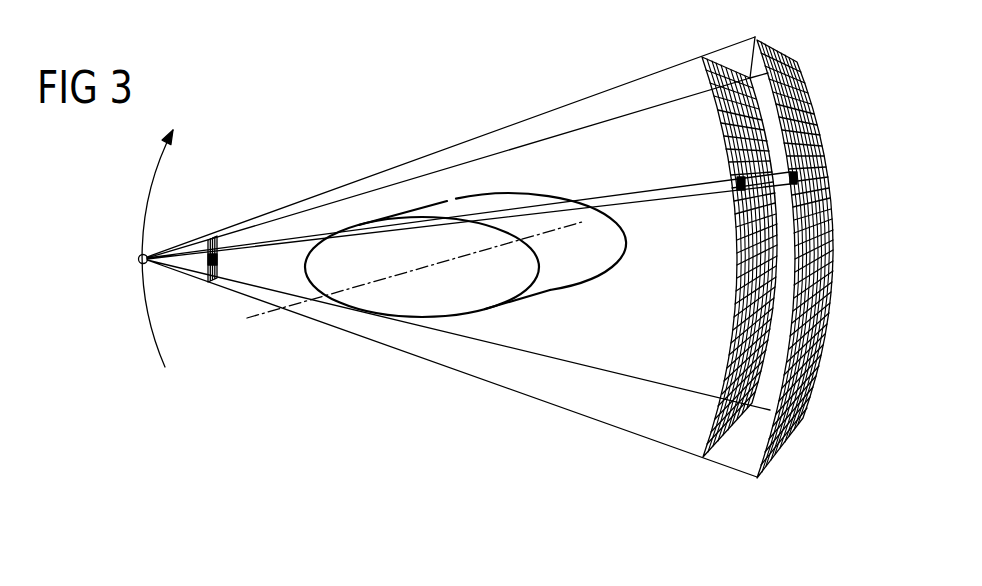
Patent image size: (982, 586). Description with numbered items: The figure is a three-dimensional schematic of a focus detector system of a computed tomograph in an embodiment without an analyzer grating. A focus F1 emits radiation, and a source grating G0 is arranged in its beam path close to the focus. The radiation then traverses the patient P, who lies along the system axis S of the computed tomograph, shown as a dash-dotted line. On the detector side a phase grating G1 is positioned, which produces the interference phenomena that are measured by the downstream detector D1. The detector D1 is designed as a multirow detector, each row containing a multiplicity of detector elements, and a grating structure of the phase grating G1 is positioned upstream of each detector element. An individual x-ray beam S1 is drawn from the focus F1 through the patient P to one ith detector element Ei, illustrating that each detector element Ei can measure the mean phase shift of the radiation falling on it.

The focus F1 is at (139, 257).
The source grating G0 is at (212, 236).
The system axis S is at (263, 311).
The patient P is at (414, 317).
The x-ray beam S1 is at (654, 190).
The phase grating G1 is at (714, 62).
The detector D1 is at (811, 89).
The ith detector element Ei is at (800, 177).